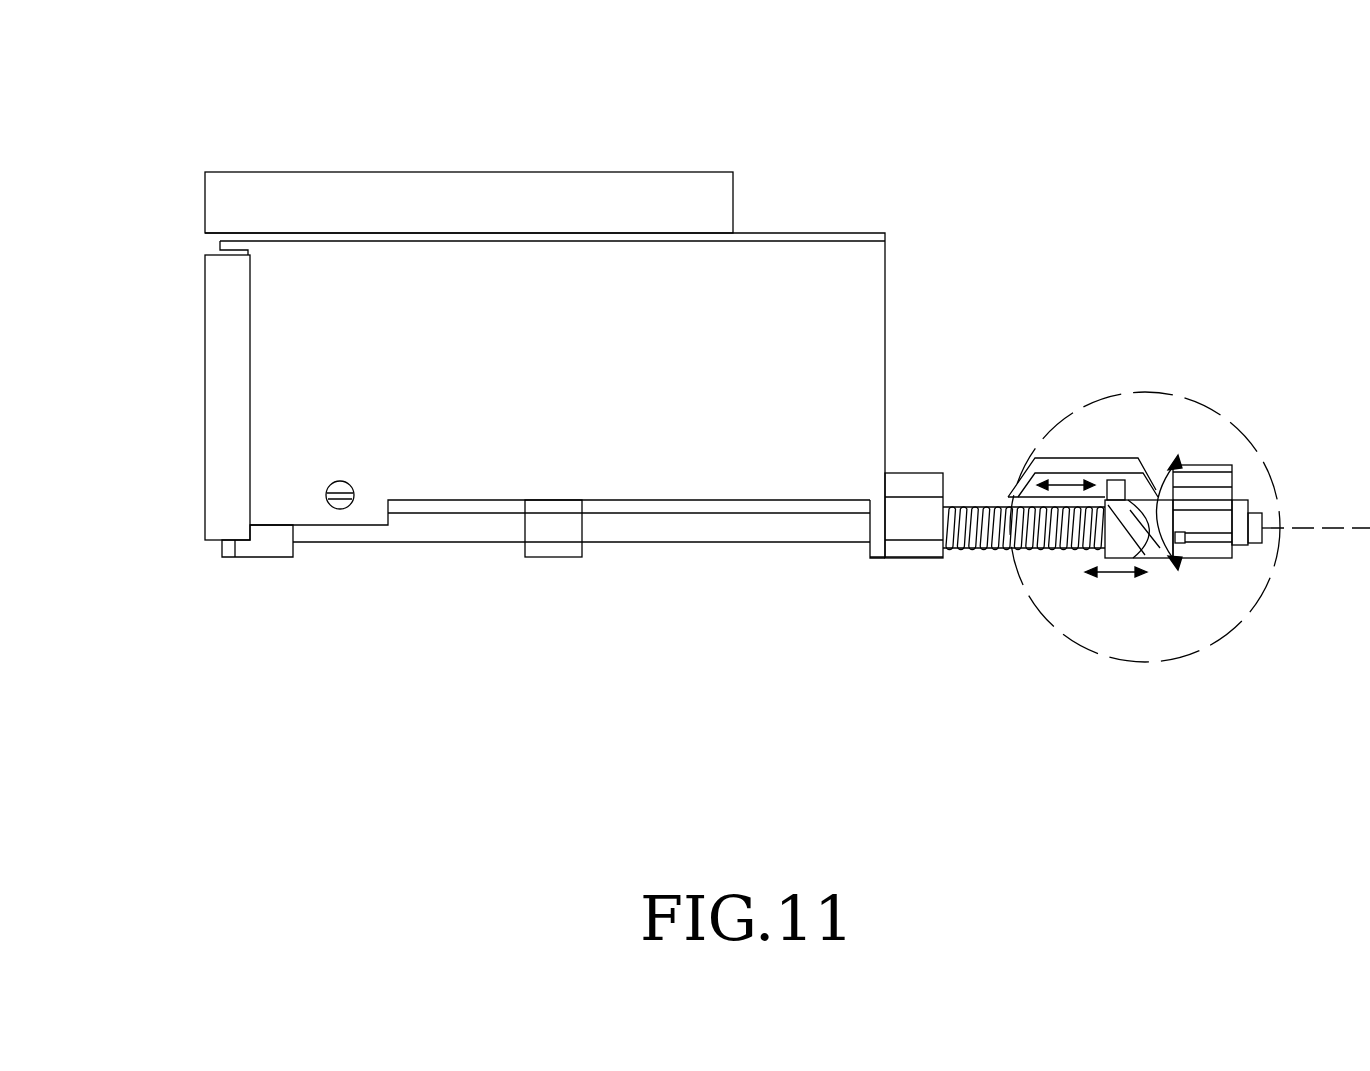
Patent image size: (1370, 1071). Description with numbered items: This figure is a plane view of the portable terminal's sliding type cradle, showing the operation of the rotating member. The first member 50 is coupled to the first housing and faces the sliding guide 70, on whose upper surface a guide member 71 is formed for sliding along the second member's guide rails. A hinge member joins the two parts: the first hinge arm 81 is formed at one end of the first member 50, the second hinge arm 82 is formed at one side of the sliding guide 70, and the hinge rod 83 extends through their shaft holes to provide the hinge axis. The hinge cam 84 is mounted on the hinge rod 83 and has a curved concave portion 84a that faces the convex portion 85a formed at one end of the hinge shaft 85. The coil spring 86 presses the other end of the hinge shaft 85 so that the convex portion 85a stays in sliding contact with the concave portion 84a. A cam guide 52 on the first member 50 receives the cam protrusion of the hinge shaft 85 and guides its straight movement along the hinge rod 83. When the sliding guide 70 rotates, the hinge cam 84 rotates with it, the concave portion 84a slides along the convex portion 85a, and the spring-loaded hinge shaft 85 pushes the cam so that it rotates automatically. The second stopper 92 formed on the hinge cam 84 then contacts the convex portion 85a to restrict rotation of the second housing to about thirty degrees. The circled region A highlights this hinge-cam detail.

The first member 50 is at (493, 198).
The sliding guide 70 is at (812, 277).
The guide member 71 is at (222, 383).
The first hinge arm 81 is at (548, 560).
The second hinge arm 82 is at (267, 542).
The hinge rod 83 is at (1332, 527).
The hinge cam 84 is at (1167, 520).
The concave portion 84a is at (1145, 560).
The hinge shaft 85 is at (1063, 553).
The convex portion 85a is at (1098, 577).
The coil spring 86 is at (977, 557).
The cam guide 52 is at (1063, 458).
The second stopper 92 is at (1153, 507).
The detail region A is at (1200, 407).